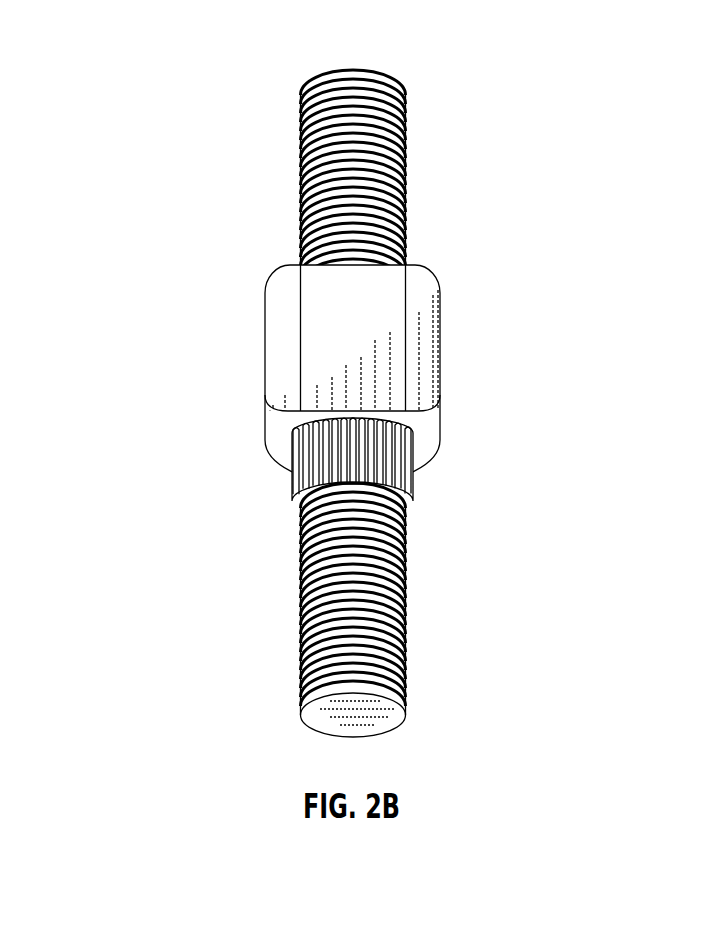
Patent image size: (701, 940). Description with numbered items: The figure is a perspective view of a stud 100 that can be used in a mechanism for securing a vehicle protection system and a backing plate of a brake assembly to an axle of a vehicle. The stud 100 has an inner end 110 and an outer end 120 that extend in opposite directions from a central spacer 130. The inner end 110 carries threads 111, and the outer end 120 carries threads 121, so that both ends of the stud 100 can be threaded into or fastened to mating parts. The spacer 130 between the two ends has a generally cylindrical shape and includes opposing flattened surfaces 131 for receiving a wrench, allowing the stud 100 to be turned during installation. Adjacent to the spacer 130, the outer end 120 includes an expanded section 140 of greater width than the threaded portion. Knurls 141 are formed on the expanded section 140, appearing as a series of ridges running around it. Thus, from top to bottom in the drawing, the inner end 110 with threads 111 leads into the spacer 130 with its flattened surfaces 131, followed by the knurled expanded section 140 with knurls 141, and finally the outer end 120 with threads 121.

The stud 100 is at (364, 396).
The inner end 110 is at (340, 240).
The threads 111 is at (407, 191).
The outer end 120 is at (393, 620).
The threads 121 is at (408, 632).
The spacer 130 is at (306, 371).
The flattened surfaces 131 is at (318, 360).
The expanded section 140 is at (352, 470).
The knurls 141 is at (413, 483).